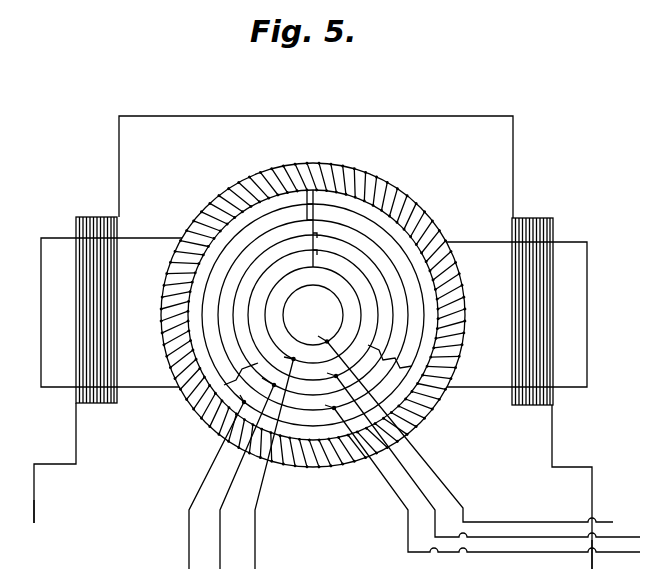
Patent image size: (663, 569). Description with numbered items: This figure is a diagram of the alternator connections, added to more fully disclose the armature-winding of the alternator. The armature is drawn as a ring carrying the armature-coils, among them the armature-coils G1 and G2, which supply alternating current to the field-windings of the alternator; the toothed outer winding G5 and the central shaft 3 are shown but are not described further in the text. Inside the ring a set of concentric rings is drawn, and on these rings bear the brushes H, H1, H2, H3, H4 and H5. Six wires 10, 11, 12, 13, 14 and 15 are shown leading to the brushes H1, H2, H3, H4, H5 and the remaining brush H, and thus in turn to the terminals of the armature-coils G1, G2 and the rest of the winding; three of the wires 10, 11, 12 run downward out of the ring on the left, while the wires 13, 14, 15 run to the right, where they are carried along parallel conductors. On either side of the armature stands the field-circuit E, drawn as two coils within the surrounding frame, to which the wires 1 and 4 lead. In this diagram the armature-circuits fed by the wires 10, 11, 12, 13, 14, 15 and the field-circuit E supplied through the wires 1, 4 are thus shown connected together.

The wire 1 is at (42, 508).
The shaft 3 is at (313, 315).
The wire 4 is at (598, 529).
The wire 10 is at (264, 464).
The wire 11 is at (204, 485).
The wire 12 is at (236, 477).
The wire 13 is at (398, 491).
The wire 14 is at (425, 486).
The wire 15 is at (470, 432).
The field-circuit E is at (557, 218).
The armature-coil G1 is at (203, 217).
The armature-coil G2 is at (325, 464).
The armature coils G5 is at (433, 222).
The brush H is at (318, 334).
The brush H1 is at (325, 403).
The brush H2 is at (325, 371).
The brush H3 is at (260, 376).
The brush H4 is at (282, 355).
The brush H5 is at (241, 393).